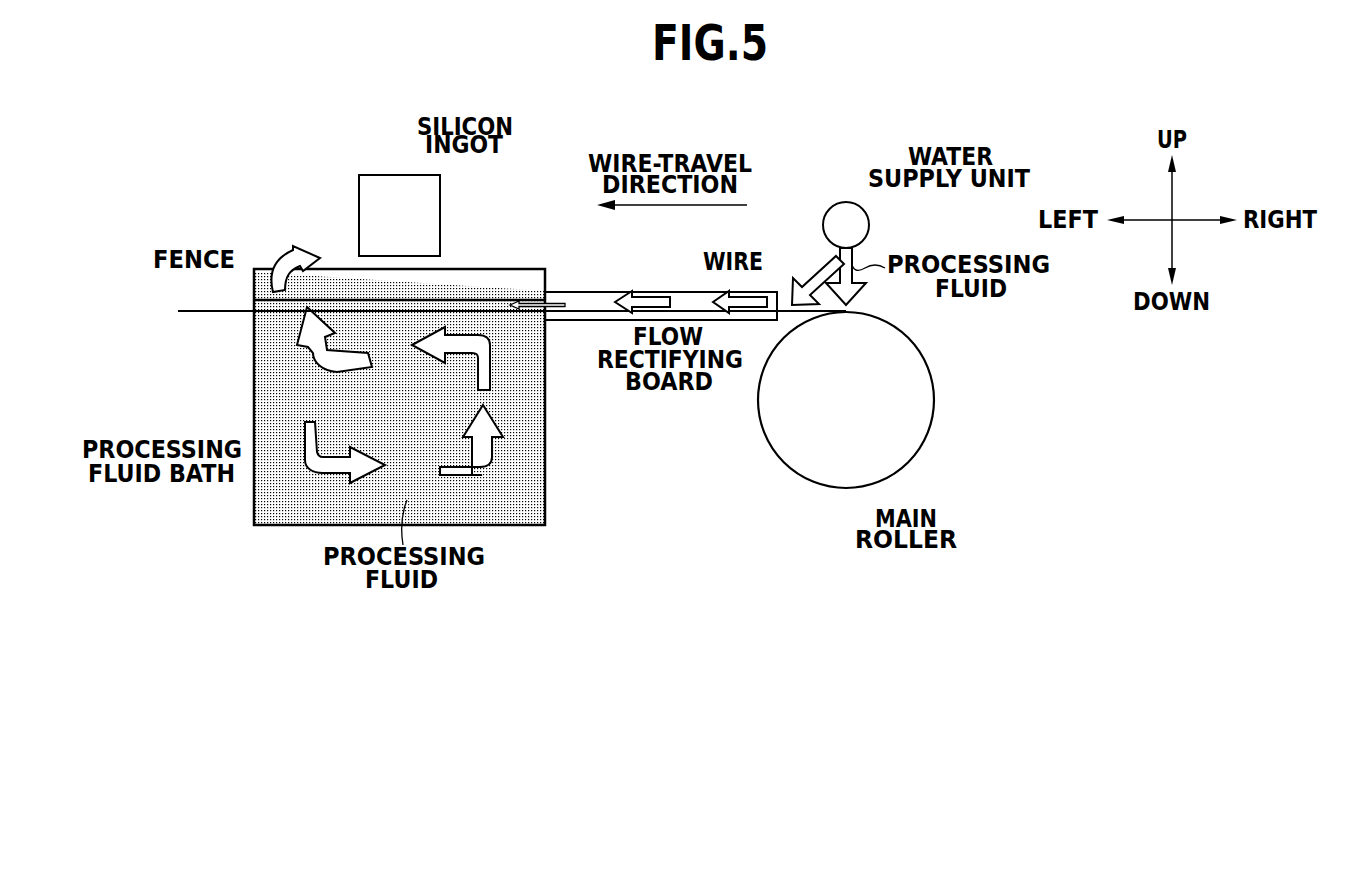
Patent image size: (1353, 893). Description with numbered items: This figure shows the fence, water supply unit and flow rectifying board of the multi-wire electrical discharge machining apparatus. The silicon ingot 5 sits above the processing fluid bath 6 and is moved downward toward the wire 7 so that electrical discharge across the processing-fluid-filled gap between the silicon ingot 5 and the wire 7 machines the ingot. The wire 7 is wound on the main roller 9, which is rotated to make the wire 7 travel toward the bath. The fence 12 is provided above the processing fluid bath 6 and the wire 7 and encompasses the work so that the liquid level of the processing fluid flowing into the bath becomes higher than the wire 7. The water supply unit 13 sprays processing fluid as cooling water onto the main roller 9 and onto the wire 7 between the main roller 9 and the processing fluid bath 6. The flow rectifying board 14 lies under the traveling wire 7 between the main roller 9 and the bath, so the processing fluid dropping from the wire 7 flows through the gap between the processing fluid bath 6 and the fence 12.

The silicon ingot 5 is at (402, 175).
The processing fluid bath 6 is at (254, 428).
The wire 7 is at (684, 292).
The main roller 9 is at (845, 490).
The fence 12 is at (254, 282).
The water supply unit 13 is at (847, 202).
The flow rectifying board 14 is at (578, 322).